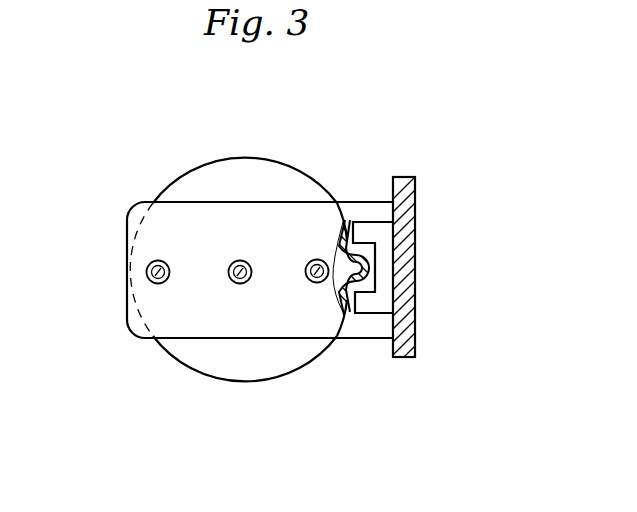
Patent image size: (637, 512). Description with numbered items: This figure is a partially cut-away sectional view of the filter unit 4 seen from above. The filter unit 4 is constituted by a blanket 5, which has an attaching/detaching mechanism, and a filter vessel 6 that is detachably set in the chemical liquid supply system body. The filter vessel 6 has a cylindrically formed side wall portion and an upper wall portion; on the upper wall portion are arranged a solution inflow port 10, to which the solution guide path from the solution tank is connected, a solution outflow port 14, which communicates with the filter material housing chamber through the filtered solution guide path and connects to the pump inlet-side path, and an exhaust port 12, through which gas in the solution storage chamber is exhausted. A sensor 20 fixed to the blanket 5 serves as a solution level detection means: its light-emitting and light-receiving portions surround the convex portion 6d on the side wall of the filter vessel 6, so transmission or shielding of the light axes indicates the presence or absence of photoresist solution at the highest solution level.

The filter unit 4 is at (146, 176).
The filter vessel 6 is at (283, 163).
The convex portion 6d is at (358, 302).
The sensor 20 is at (371, 232).
The blanket 5 is at (415, 205).
The solution inflow port 10 is at (155, 284).
The solution outflow port 14 is at (238, 284).
The exhaust port 12 is at (315, 283).